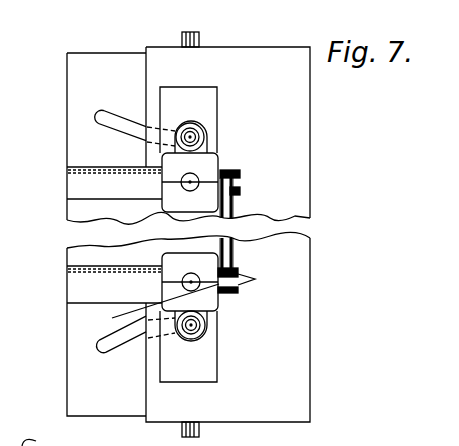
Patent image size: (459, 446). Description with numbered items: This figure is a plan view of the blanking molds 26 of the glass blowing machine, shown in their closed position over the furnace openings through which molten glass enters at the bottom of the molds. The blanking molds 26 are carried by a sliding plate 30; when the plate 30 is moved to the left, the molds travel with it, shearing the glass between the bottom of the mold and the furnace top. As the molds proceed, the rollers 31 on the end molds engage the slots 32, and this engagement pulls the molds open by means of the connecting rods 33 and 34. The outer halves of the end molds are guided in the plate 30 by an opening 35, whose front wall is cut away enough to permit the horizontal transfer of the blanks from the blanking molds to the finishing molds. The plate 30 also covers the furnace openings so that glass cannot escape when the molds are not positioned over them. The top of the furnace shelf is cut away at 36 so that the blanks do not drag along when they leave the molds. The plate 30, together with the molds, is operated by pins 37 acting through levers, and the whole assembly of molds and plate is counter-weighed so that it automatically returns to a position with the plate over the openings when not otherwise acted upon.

The blanking molds 26 is at (217, 162).
The plate 30 is at (310, 380).
The rollers 31 is at (203, 133).
The slots 32 is at (118, 117).
The connecting rod 33 is at (218, 266).
The connecting rod 34 is at (149, 310).
The opening 35 is at (215, 102).
The cut-away of furnace shelf 36 is at (76, 186).
The pins 37 is at (182, 36).